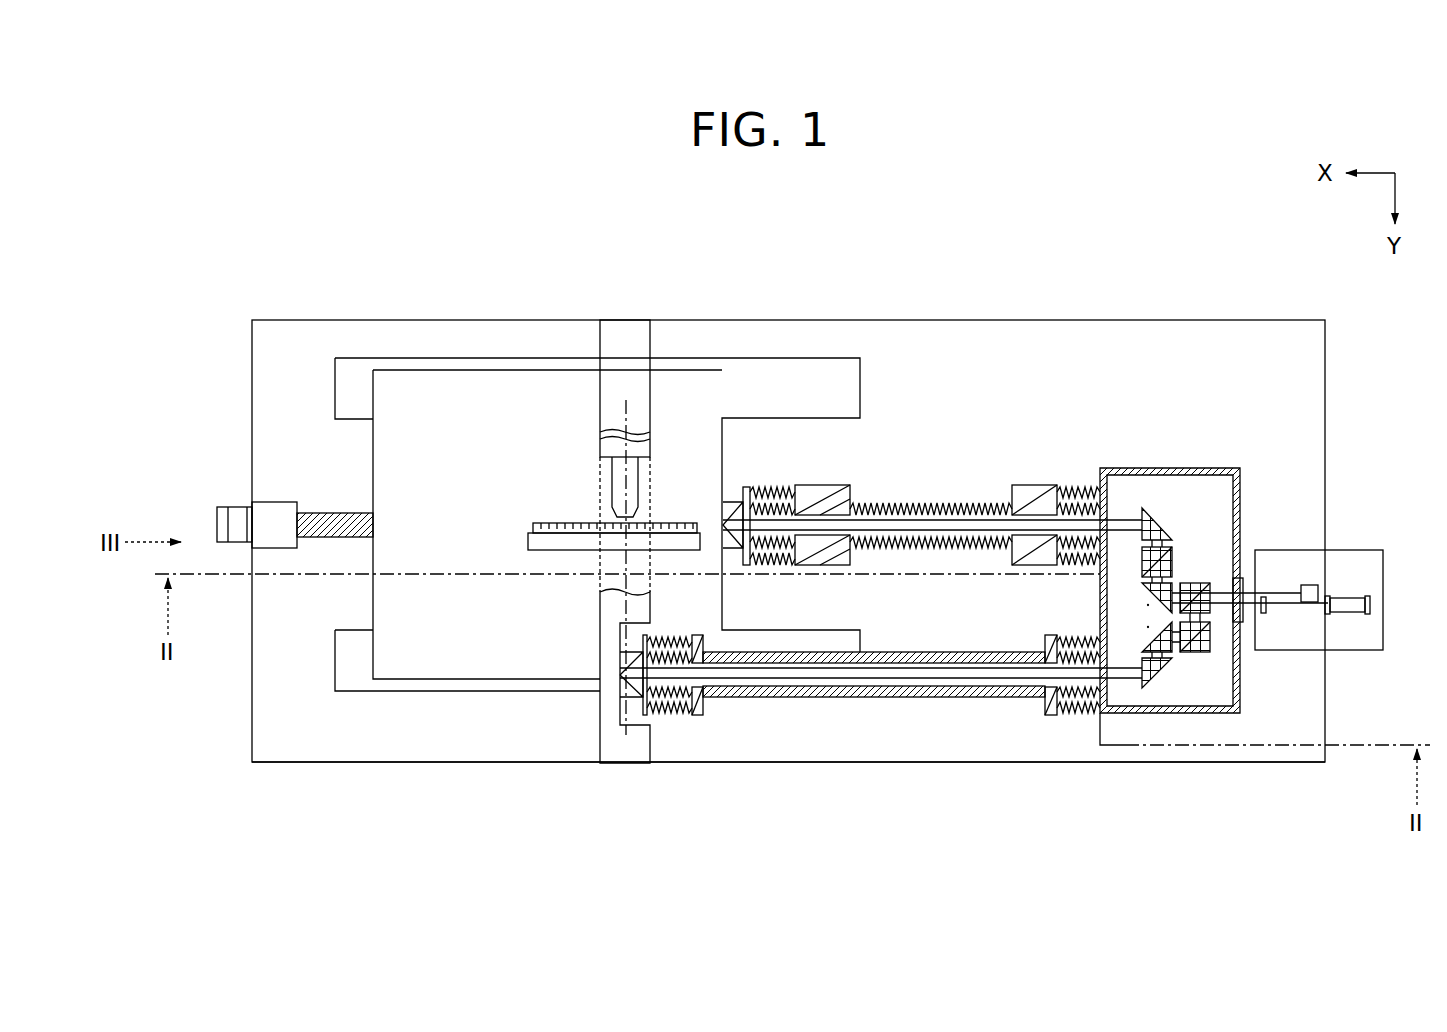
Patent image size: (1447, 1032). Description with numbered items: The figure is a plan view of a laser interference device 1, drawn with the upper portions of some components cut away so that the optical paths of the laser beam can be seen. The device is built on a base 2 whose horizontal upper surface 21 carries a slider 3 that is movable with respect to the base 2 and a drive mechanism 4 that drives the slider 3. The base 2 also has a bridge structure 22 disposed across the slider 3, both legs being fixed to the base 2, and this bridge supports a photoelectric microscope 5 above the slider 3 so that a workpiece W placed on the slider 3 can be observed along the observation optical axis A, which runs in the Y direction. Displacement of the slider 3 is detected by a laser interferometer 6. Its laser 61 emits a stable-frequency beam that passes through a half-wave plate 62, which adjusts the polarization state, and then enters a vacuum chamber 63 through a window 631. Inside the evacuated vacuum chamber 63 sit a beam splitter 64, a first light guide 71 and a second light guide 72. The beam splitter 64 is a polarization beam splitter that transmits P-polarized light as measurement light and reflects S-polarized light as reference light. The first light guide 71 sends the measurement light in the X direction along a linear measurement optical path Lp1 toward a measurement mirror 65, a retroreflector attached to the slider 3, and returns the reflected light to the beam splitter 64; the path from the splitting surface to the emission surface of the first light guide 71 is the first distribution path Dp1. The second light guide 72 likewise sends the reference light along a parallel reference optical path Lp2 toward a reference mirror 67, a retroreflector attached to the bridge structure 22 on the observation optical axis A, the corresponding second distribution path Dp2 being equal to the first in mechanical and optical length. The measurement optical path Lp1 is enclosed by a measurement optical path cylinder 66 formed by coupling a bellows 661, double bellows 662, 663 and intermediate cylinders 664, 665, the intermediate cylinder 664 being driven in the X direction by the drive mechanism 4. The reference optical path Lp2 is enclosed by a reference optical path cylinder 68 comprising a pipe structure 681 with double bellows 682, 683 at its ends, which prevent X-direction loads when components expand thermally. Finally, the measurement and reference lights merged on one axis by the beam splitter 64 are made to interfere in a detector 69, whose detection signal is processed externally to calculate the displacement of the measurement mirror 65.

The laser interference device 1 is at (273, 268).
The base 2 is at (388, 764).
The upper surface 21 is at (490, 746).
The bridge structure 22 is at (628, 330).
The slider 3 is at (373, 447).
The drive mechanism 4 is at (276, 471).
The photoelectric microscope 5 is at (612, 489).
The workpiece W is at (552, 522).
The observation optical axis A is at (623, 413).
The laser interferometer 6 is at (1260, 559).
The laser 61 is at (1353, 598).
The half-wave plate 62 is at (1266, 614).
The vacuum chamber 63 is at (1162, 468).
The window 631 is at (1242, 580).
The beam splitter 64 is at (1193, 583).
The measurement mirror 65 is at (735, 500).
The measurement optical path cylinder 66 is at (917, 469).
The bellows 661 is at (897, 503).
The double bellows 662 is at (780, 485).
The double bellows 663 is at (1082, 483).
The intermediate cylinder 664 is at (825, 492).
The intermediate cylinder 665 is at (1037, 483).
The reference mirror 67 is at (632, 698).
The reference optical path cylinder 68 is at (860, 691).
The pipe structure 681 is at (903, 643).
The double bellows 682 is at (678, 635).
The double bellows 683 is at (1075, 627).
The detector 69 is at (1308, 584).
The first light guide 71 is at (1164, 513).
The second light guide 72 is at (1164, 675).
The first distribution path Dp1 is at (1147, 605).
The second distribution path Dp2 is at (1147, 627).
The measurement optical path Lp1 is at (980, 517).
The reference optical path Lp2 is at (941, 679).